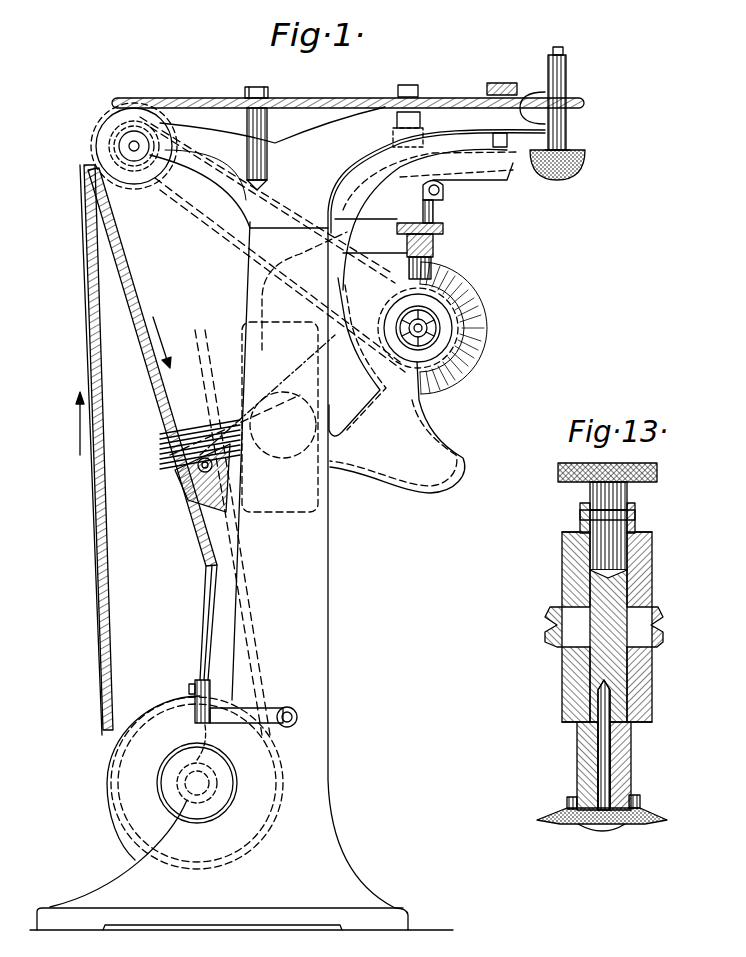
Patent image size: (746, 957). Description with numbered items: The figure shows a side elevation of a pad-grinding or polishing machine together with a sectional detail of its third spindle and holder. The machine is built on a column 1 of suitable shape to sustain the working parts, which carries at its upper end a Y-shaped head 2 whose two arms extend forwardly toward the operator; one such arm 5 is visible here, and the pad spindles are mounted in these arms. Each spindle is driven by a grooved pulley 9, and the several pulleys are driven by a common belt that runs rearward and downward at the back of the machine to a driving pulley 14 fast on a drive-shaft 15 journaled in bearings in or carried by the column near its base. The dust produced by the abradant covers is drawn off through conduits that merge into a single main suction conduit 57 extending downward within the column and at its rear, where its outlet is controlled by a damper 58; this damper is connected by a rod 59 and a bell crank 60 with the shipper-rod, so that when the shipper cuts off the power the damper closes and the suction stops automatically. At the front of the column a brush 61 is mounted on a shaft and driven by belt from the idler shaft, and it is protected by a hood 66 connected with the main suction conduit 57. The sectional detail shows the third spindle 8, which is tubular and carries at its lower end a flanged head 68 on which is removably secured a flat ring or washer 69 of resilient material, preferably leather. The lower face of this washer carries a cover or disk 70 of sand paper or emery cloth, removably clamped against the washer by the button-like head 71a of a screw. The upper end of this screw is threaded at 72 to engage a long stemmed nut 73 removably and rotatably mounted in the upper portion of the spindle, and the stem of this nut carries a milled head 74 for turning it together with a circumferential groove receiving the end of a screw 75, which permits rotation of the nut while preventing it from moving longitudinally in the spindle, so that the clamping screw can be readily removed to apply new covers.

In FIG. 1, the column 1 is at (305, 623).
In FIG. 1, the head 2 is at (322, 148).
In FIG. 1, the arm 5 is at (256, 298).
In FIG. 13, the spindle 8 is at (632, 763).
In FIG. 13, the grooved pulley 9 is at (658, 614).
In FIG. 1, the driving pulley 14 is at (128, 781).
In FIG. 1, the drive-shaft 15 is at (192, 790).
In FIG. 1, the conduit 57 is at (293, 417).
In FIG. 1, the damper 58 is at (187, 466).
In FIG. 1, the rod 59 is at (196, 558).
In FIG. 1, the bell crank 60 is at (200, 686).
In FIG. 1, the brush 61 is at (468, 299).
In FIG. 1, the hood 66 is at (397, 385).
In FIG. 13, the flanged head 68 is at (640, 804).
In FIG. 13, the flat ring or washer 69 is at (655, 820).
In FIG. 13, the cover or disk 70 is at (610, 752).
In FIG. 13, the button-like head 71a is at (602, 825).
In FIG. 13, the threaded upper end 72 is at (643, 695).
In FIG. 13, the long stemmed nut 73 is at (633, 600).
In FIG. 1, the milled head 74 is at (500, 88).
In FIG. 13, the milled head 74 is at (654, 478).
In FIG. 13, the screw 75 is at (580, 516).